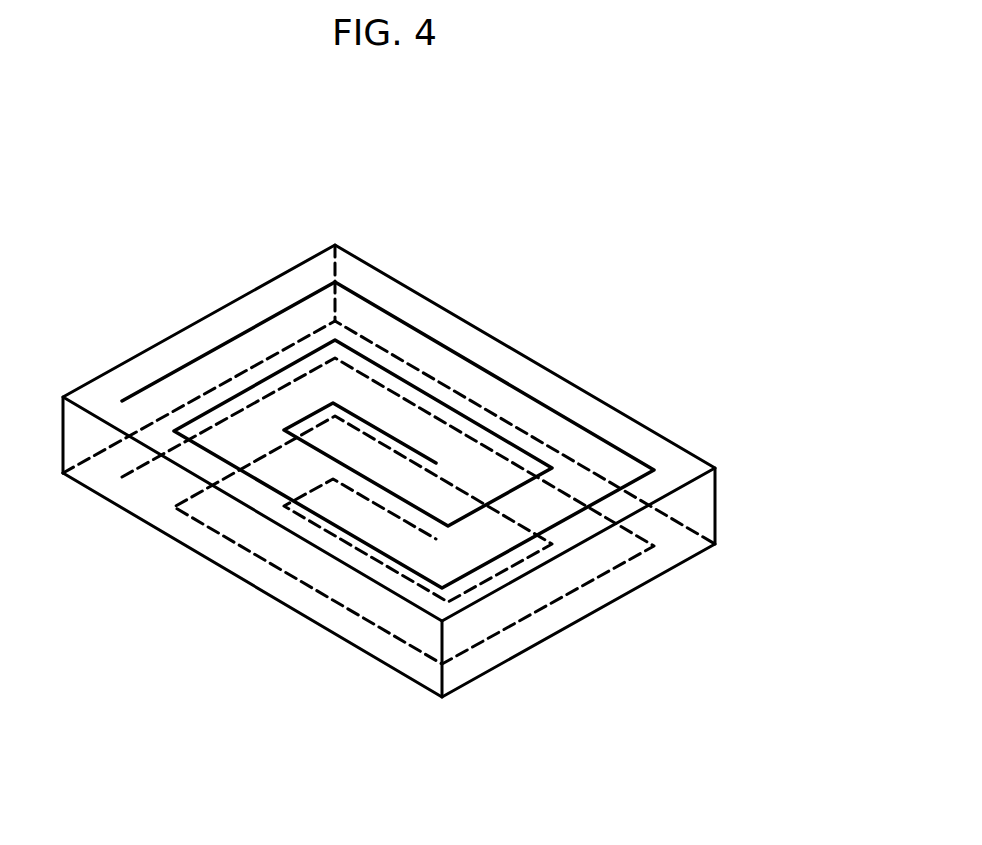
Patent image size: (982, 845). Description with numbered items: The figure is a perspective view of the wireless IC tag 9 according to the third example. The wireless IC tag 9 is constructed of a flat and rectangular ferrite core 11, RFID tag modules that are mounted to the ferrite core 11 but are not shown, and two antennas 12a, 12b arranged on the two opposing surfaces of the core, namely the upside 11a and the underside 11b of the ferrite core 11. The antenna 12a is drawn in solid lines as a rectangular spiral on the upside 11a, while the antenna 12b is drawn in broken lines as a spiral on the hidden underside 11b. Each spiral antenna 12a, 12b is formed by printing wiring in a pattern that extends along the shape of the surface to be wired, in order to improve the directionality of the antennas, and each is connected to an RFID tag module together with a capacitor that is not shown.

The wireless IC tag 9 is at (438, 465).
The ferrite core 11 is at (438, 479).
The upside of the ferrite core 11a is at (605, 420).
The underside of the ferrite core 11b is at (570, 607).
The antenna 12a is at (411, 323).
The antenna 12b is at (407, 647).